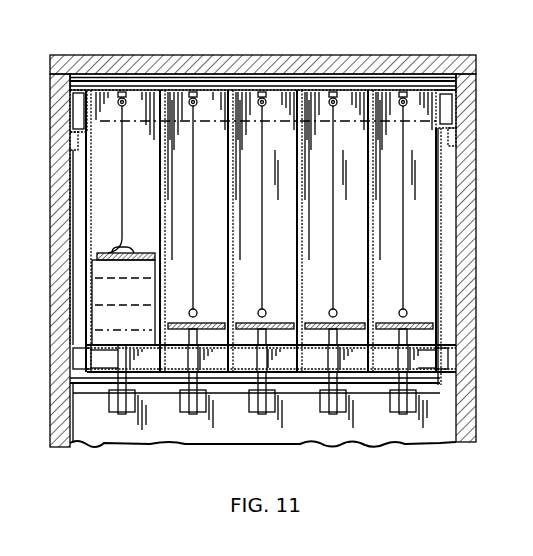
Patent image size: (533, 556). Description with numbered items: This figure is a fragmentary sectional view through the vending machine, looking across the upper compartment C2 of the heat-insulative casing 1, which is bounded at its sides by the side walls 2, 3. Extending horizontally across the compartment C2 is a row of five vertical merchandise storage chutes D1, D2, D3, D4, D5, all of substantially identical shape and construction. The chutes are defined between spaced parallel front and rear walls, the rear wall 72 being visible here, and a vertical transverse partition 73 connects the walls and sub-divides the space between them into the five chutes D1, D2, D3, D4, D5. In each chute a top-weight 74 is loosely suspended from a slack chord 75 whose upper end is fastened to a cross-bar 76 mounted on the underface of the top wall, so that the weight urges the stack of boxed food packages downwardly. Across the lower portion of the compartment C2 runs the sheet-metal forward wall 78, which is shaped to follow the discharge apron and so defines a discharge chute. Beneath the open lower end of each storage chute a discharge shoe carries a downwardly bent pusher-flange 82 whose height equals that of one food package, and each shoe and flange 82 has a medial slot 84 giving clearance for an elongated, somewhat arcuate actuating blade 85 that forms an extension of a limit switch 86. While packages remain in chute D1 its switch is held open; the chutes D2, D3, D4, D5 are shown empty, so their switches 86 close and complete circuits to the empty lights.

The casing 1 is at (476, 158).
The side wall 2 is at (62, 211).
The side wall 3 is at (476, 181).
The rear wall 72 is at (104, 169).
The vertical transverse partition 73 is at (165, 95).
The top-weight 74 is at (95, 258).
The slack chord 75 is at (120, 148).
The cross-bar 76 is at (388, 80).
The forward wall 78 is at (230, 426).
The pusher-flange 82 is at (107, 358).
The medial slot 84 is at (120, 382).
The actuating blade 85 is at (195, 336).
The limit switch 86 is at (110, 397).
The upper compartment C2 is at (280, 138).
The storage chute D1 is at (140, 116).
The storage chute D2 is at (208, 112).
The storage chute D3 is at (283, 116).
The storage chute D4 is at (350, 107).
The storage chute D5 is at (418, 106).